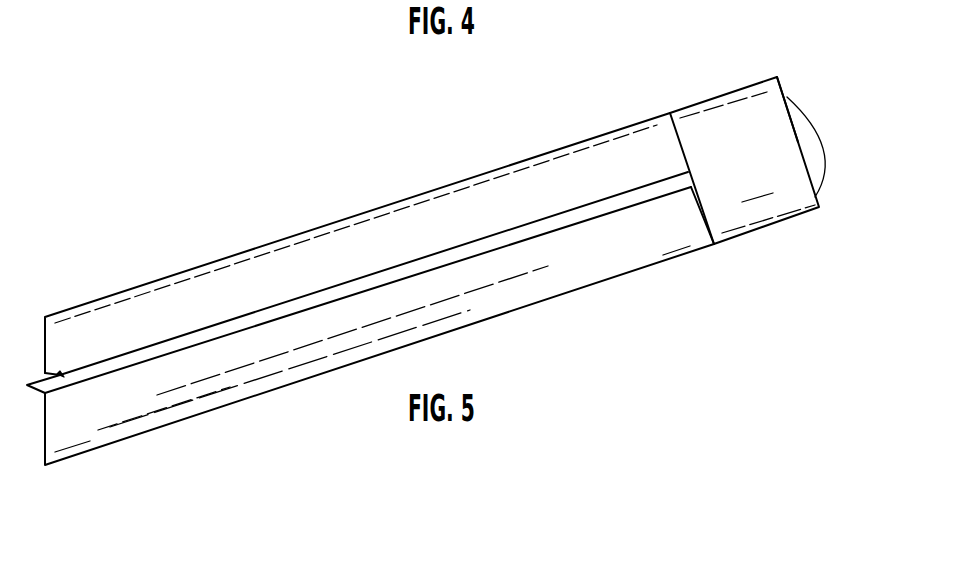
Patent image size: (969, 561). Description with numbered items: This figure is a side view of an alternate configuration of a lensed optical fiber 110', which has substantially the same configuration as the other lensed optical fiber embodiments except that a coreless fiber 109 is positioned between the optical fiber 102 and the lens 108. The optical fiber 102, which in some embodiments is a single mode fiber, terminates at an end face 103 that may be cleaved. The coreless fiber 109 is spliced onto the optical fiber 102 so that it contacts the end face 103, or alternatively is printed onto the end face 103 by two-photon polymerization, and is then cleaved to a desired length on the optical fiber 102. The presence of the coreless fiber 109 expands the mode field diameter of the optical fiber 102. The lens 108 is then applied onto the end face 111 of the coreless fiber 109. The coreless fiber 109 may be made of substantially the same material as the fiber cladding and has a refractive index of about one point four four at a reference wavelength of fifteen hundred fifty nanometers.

The lensed optical fiber 110' is at (462, 232).
The optical fiber 102 is at (583, 262).
The end face 103 is at (704, 224).
The lens 108 is at (818, 131).
The coreless fiber 109 is at (735, 118).
The end face 111 is at (790, 110).